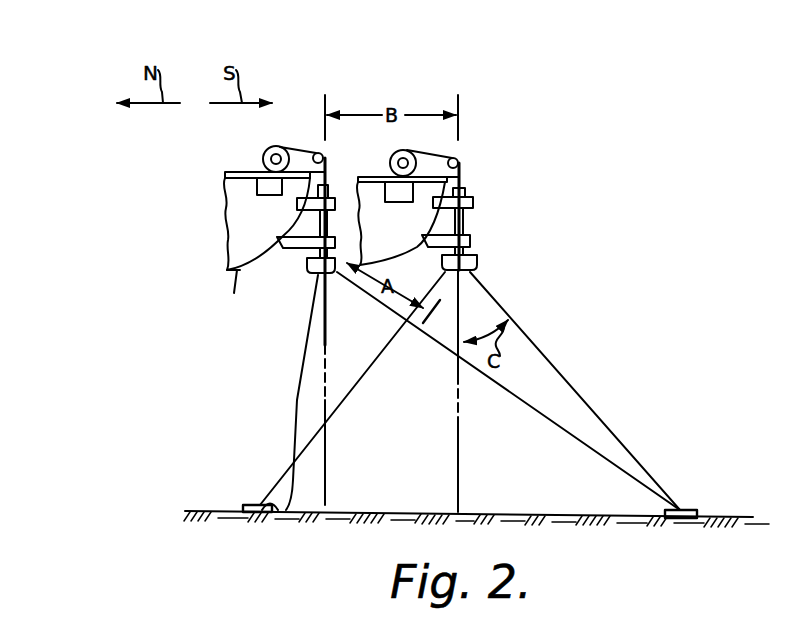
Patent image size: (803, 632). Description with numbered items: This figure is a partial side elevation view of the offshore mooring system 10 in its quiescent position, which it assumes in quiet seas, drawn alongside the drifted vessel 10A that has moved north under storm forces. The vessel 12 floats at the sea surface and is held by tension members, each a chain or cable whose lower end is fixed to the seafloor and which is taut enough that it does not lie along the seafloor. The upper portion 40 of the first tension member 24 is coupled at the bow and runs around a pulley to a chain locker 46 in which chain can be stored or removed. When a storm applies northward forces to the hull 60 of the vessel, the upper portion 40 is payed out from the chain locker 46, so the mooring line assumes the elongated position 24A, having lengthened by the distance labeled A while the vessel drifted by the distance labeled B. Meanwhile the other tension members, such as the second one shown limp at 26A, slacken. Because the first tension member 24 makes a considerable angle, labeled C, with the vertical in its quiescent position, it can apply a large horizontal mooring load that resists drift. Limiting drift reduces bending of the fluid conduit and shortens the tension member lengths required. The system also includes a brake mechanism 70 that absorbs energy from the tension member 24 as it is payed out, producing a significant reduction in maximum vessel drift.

The offshore system 10 is at (471, 106).
The drifted vessel 10A is at (311, 106).
The vessel 12 is at (220, 231).
The first tension member 24 is at (548, 356).
The elongated mooring line position 24A is at (577, 438).
The limp second tension member 26A is at (299, 378).
The upper portion of tension member 40 is at (422, 154).
The chain locker 46 is at (223, 187).
The hull 60 is at (234, 294).
The brake mechanism 70 is at (265, 148).